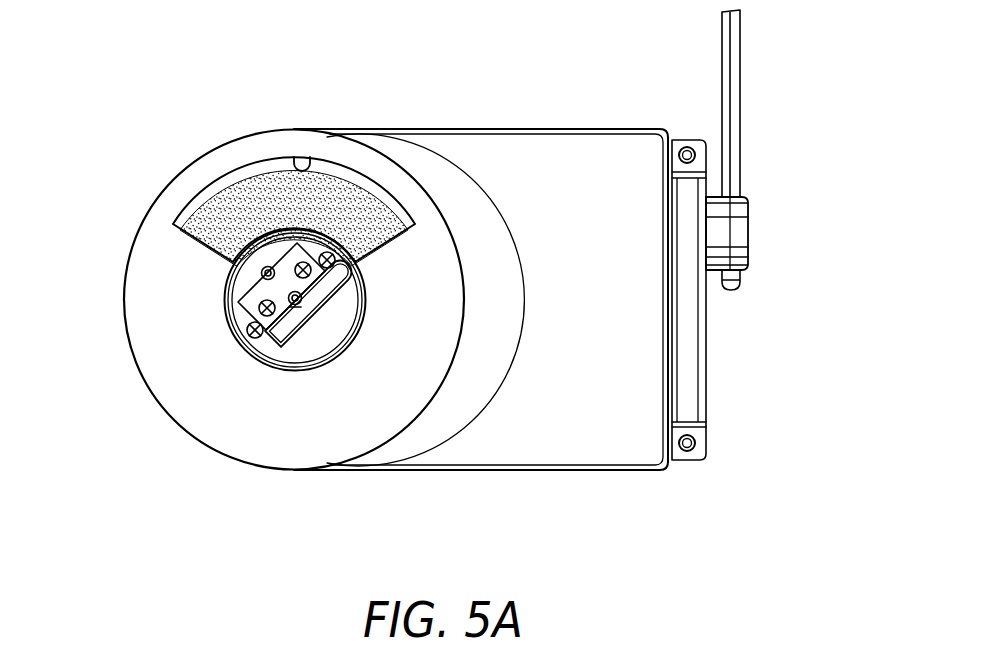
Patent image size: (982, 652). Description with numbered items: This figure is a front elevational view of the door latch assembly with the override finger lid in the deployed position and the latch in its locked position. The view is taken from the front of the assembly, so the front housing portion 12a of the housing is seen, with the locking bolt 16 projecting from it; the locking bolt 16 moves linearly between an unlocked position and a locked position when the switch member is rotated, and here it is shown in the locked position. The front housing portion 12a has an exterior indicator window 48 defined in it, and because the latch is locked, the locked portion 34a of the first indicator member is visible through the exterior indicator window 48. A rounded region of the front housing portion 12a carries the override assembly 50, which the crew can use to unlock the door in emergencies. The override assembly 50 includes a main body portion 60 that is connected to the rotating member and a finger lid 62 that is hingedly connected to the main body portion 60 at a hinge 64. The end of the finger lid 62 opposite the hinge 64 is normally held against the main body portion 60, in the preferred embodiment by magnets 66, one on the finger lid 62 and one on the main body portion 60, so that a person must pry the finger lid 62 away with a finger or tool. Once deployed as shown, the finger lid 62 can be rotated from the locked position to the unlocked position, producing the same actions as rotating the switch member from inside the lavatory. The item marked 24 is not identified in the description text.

The front housing portion 12a is at (563, 145).
The locking bolt 16 is at (740, 93).
The coupling body 24 is at (742, 237).
The locked portion 34a is at (240, 183).
The exterior indicator window 48 is at (303, 170).
The override assembly 50 is at (194, 388).
The main body portion 60 is at (285, 248).
The finger lid 62 is at (273, 343).
The hinge 64 is at (247, 330).
The magnets 66 is at (261, 273).